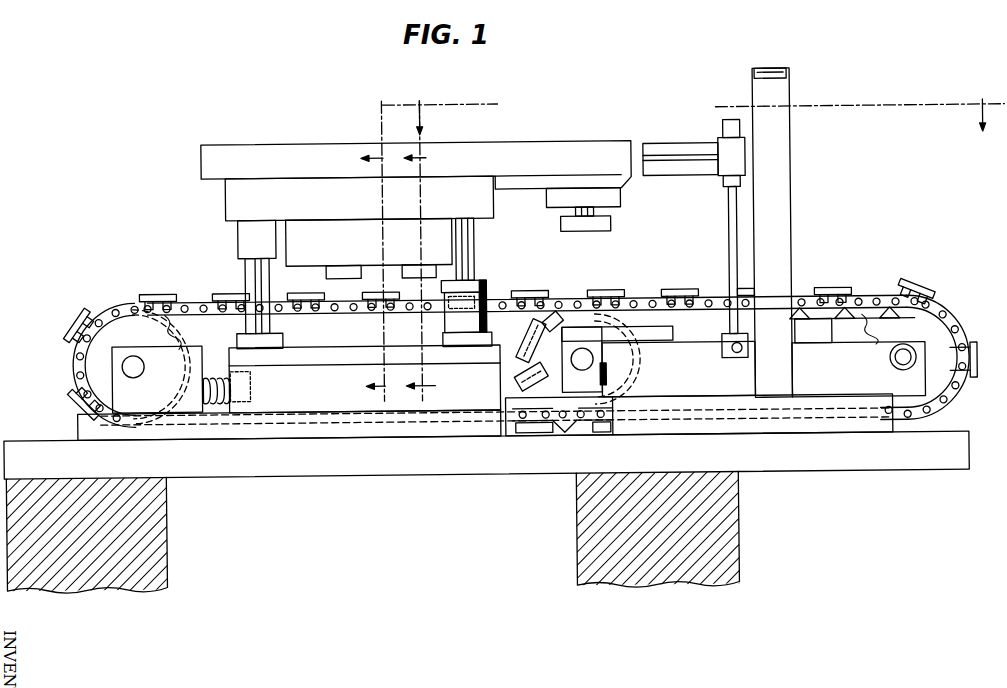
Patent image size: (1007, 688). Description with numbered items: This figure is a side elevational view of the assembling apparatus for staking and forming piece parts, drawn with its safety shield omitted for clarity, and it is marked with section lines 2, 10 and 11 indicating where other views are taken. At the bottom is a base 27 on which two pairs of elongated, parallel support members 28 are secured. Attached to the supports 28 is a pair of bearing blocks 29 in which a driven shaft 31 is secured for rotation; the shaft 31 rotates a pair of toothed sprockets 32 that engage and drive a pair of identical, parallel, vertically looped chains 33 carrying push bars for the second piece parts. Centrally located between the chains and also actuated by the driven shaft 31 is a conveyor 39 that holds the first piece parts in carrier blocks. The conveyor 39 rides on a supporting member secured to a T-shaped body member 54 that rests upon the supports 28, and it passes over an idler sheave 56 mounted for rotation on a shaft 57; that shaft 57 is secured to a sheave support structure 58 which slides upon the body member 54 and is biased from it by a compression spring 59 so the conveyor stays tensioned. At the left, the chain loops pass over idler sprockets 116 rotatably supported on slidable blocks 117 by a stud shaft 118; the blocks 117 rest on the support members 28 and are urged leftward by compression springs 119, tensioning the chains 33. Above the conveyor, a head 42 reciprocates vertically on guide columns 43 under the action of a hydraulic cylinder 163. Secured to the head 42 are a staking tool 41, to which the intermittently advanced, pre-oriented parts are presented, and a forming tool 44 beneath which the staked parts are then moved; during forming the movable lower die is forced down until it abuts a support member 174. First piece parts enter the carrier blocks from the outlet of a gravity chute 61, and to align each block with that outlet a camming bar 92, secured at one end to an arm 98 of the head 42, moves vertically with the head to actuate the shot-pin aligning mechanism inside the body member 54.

The section line 2- 2 is at (693, 117).
The section line 10- 10 is at (433, 250).
The section line 11- 11 is at (364, 251).
The base 27 is at (952, 442).
The support members 28 is at (824, 439).
The bearing blocks 29 is at (912, 381).
The driven shaft 31 is at (903, 361).
The toothed sprockets 32 is at (880, 331).
The chains 33 is at (919, 291).
The conveyor 39 is at (517, 373).
The staking tool 41 is at (583, 226).
The head 42 is at (343, 138).
The guide columns 43 is at (246, 268).
The forming tool 44 is at (434, 268).
The body member 54 is at (653, 398).
The idler sheave 56 is at (552, 375).
The shaft 57 is at (582, 371).
The sheave support structure 58 is at (588, 337).
The compression spring 59 is at (607, 375).
The gravity chute 61 is at (792, 158).
The camming bar 92 is at (730, 227).
The arm 98 is at (668, 145).
The idler sprockets 116 is at (95, 352).
The slidable blocks 117 is at (118, 385).
The stud shaft 118 is at (152, 347).
The compression springs 119 is at (223, 403).
The hydraulic cylinder 163 is at (480, 283).
The support member 174 is at (330, 397).